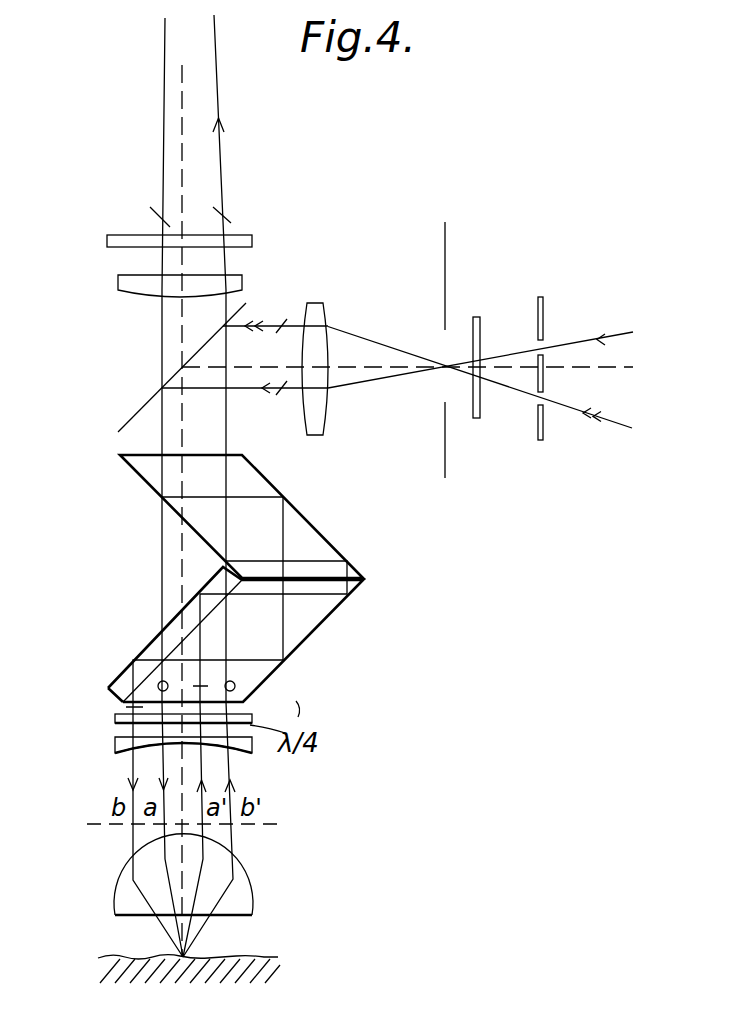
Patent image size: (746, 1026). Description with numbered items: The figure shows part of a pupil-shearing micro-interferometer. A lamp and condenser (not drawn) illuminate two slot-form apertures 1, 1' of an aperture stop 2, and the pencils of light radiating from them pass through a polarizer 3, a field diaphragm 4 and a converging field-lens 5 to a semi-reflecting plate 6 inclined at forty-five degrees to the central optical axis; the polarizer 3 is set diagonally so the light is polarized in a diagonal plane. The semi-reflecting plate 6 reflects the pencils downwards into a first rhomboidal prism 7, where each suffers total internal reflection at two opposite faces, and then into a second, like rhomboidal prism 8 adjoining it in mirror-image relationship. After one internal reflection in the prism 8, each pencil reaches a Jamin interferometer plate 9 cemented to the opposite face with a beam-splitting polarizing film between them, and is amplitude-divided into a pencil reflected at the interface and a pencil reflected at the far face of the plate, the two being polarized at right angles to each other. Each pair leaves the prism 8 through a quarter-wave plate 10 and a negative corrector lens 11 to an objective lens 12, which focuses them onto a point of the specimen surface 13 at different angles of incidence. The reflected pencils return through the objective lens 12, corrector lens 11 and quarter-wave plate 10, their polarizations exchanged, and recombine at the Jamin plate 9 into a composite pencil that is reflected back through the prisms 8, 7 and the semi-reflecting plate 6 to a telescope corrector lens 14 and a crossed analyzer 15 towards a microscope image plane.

The slot-form aperture 1 is at (480, 350).
The slot-form aperture 1' is at (480, 378).
The aperture stop 2 is at (545, 435).
The polarizer 3 is at (482, 415).
The field diaphragm 4 is at (447, 470).
The converging field-lens 5 is at (313, 308).
The semi-reflecting plate 6 is at (135, 413).
The first rhomboidal prism 7 is at (317, 525).
The second rhomboidal prism 8 is at (320, 622).
The Jamin interferometer plate 9 is at (173, 631).
The quarter-wave plate 10 is at (115, 719).
The negative corrector lens 11 is at (120, 752).
The objective lens 12 is at (243, 907).
The specimen surface 13 is at (127, 957).
The telescope corrector lens 14 is at (120, 290).
The crossed analyzer 15 is at (252, 238).